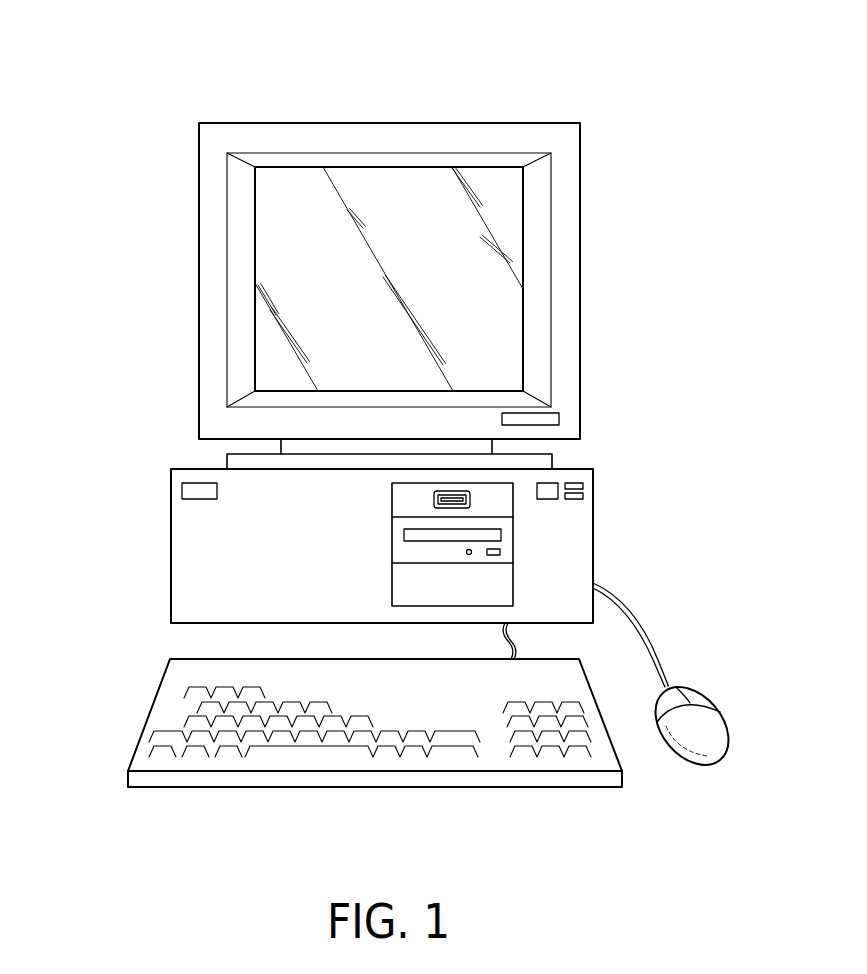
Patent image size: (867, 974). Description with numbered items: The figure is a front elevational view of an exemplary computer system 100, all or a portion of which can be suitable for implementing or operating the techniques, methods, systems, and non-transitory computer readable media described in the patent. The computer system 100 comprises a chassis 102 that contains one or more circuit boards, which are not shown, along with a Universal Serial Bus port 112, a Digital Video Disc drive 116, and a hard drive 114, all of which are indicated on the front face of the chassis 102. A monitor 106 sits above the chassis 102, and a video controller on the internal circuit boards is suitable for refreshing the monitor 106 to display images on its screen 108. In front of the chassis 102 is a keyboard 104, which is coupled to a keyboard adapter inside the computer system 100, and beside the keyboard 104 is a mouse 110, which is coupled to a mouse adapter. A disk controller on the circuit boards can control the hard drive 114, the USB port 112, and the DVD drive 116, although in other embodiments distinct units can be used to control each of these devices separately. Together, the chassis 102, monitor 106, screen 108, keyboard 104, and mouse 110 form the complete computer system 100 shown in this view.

The computer system 100 is at (578, 92).
The chassis 102 is at (171, 548).
The keyboard 104 is at (150, 710).
The monitor 106 is at (275, 123).
The screen 108 is at (303, 283).
The mouse 110 is at (712, 715).
The Universal Serial Bus (USB) port 112 is at (470, 497).
The hard drive 114 is at (503, 583).
The Digital Video Disc (DVD) drive 116 is at (505, 541).